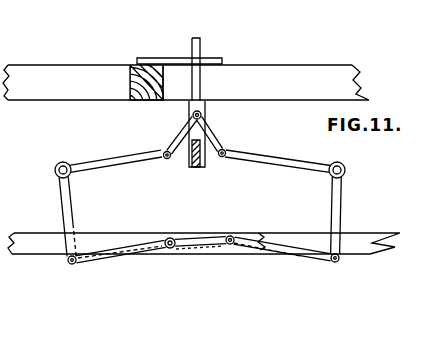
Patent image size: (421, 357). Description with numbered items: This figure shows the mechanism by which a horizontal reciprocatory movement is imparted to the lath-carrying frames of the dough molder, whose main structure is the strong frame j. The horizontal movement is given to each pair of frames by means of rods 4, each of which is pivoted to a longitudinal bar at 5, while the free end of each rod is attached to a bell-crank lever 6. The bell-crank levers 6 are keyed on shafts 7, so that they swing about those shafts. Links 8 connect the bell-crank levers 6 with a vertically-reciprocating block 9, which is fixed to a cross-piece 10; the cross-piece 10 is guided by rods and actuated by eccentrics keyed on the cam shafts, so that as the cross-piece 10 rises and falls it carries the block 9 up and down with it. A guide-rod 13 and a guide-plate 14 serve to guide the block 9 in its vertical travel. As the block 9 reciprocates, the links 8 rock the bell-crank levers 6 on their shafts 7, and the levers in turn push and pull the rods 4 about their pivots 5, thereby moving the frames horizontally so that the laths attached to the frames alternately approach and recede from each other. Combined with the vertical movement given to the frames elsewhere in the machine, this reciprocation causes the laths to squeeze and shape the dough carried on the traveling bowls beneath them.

The rod 4 is at (100, 263).
The pivot 5 is at (171, 236).
The bell-crank lever 6 is at (118, 171).
The shaft 7 is at (57, 165).
The link 8 is at (177, 137).
The vertically-reciprocating block 9 is at (207, 162).
The cross-piece 10 is at (190, 160).
The guide-rod 13 is at (201, 80).
The guide-plate 14 is at (207, 59).
The frame j is at (292, 82).